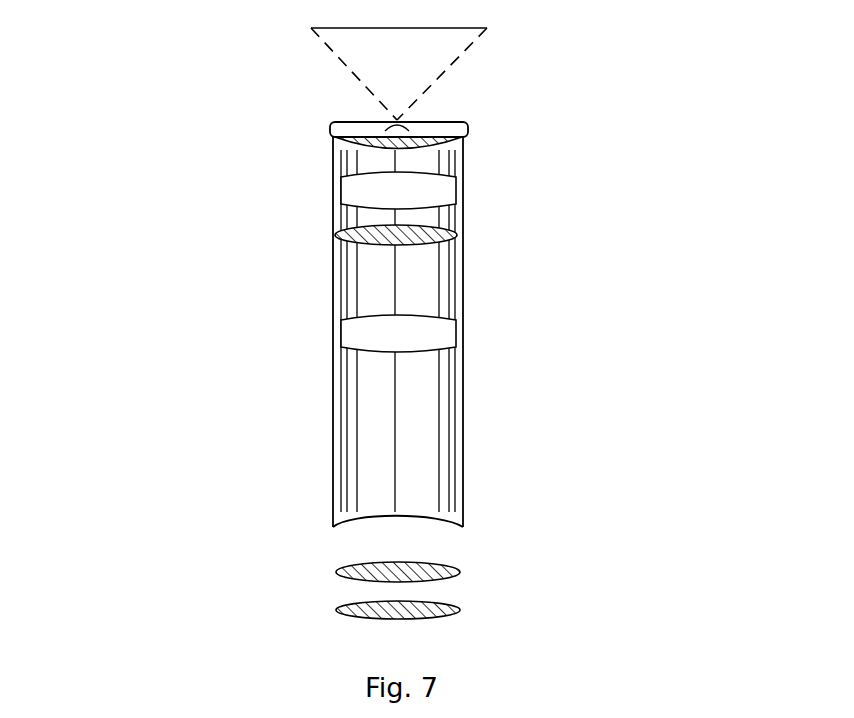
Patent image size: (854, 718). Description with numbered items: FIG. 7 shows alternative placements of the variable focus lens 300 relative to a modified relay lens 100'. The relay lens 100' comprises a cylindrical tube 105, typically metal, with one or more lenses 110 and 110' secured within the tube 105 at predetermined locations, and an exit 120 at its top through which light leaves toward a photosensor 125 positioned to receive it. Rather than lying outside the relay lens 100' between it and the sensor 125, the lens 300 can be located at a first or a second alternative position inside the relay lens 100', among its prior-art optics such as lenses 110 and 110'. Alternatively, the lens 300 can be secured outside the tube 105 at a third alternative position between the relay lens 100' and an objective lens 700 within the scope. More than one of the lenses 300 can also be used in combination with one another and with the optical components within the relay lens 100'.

The relay lens 100' is at (257, 414).
The cylindrical tube 105 is at (463, 469).
The lens 110 is at (432, 156).
The lens 110' is at (435, 229).
The exit 120 is at (342, 147).
The photosensor 125 is at (322, 30).
The external lens 300 is at (463, 192).
The objective lens 700 is at (460, 611).